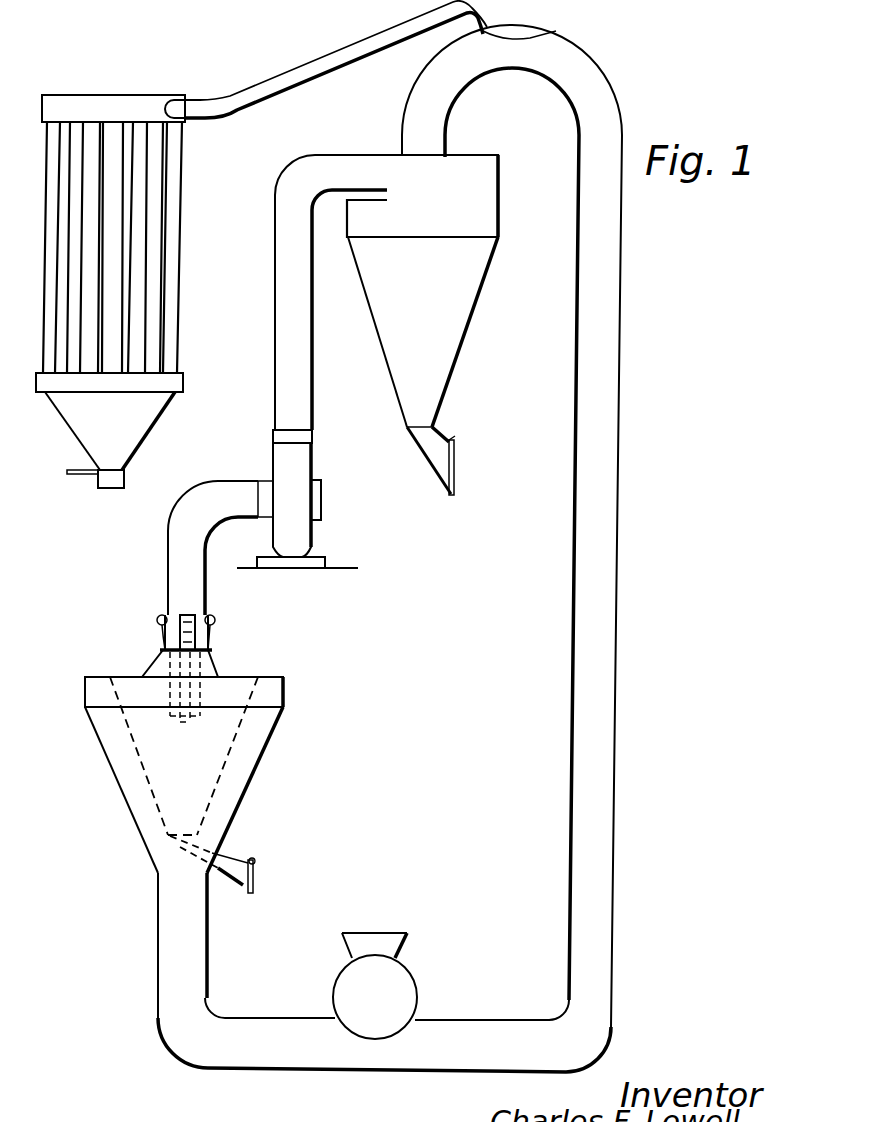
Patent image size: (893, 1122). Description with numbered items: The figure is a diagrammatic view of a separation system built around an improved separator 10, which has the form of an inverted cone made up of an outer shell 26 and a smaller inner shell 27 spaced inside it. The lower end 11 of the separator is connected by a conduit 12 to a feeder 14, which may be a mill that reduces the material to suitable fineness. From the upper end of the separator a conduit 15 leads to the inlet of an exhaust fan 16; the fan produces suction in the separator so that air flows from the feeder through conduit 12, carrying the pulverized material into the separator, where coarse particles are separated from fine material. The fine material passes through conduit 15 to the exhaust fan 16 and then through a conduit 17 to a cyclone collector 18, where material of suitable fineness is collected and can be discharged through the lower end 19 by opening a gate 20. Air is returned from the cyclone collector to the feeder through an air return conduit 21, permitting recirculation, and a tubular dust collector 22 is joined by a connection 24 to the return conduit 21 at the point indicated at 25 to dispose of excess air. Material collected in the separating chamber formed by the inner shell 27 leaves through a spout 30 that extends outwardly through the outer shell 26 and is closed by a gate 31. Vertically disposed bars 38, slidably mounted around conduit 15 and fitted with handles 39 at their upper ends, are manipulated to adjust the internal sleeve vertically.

The separator 10 is at (108, 773).
The lower end of separator 11 is at (163, 863).
The conduit 12 is at (175, 1017).
The feeder 14 is at (377, 1018).
The conduit 15 is at (170, 566).
The exhaust fan 16 is at (300, 527).
The conduit 17 is at (277, 333).
The cyclone collector 18 is at (422, 291).
The lower end of cyclone collector 19 is at (421, 447).
The gate 20 is at (455, 470).
The air return conduit 21 is at (605, 332).
The dust collector 22 is at (168, 228).
The connection 24 is at (289, 78).
The connection point 25 is at (556, 31).
The outer shell 26 is at (260, 750).
The inner shell 27 is at (212, 782).
The spout 30 is at (240, 887).
The gate 31 is at (257, 882).
The bars 38 is at (190, 628).
The handles 39 is at (158, 618).